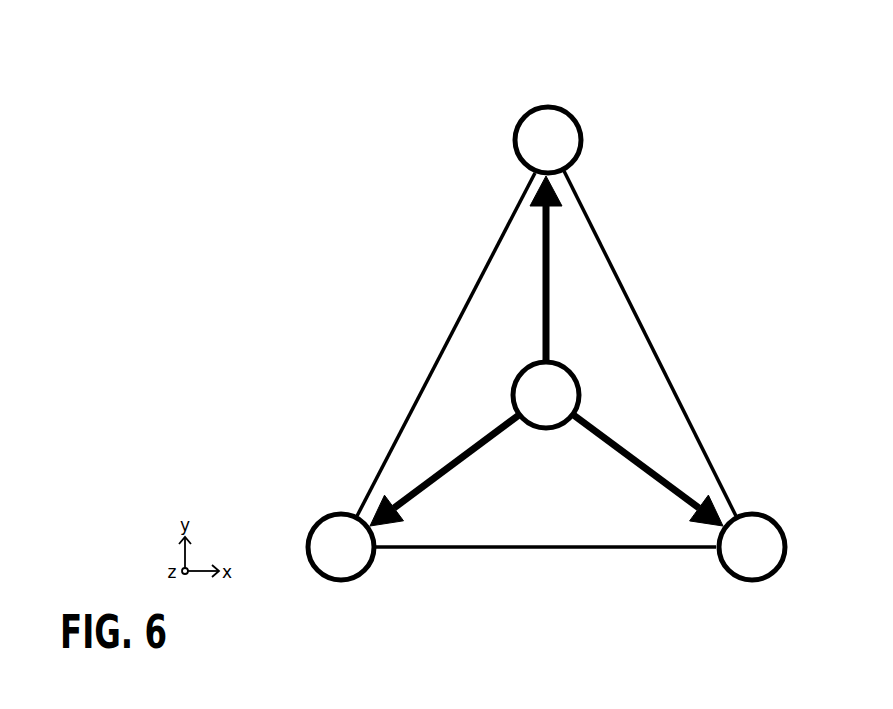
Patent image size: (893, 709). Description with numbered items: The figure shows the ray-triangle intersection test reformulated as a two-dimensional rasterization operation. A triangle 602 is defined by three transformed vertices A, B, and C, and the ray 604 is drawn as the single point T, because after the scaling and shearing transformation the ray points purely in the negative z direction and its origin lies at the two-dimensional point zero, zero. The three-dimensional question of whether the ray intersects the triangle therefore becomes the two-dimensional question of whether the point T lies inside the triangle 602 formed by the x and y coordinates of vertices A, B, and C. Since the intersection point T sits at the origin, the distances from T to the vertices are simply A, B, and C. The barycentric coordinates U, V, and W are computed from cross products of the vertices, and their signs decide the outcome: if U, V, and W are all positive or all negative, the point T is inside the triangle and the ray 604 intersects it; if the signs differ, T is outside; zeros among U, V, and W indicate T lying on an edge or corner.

The triangle 602 is at (339, 155).
The ray 604 is at (533, 363).
The vertex A is at (341, 547).
The vertex B is at (752, 547).
The vertex C is at (548, 140).
The barycentric coordinate U is at (650, 343).
The barycentric coordinate V is at (446, 344).
The barycentric coordinate W is at (546, 515).